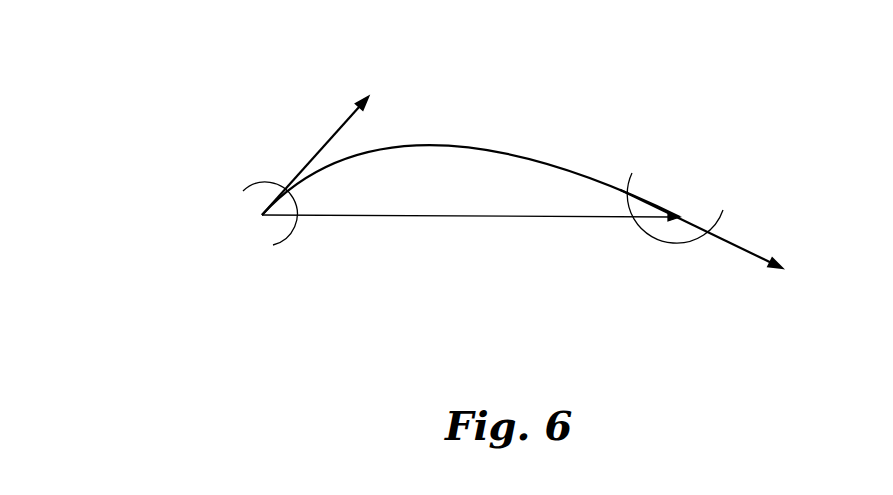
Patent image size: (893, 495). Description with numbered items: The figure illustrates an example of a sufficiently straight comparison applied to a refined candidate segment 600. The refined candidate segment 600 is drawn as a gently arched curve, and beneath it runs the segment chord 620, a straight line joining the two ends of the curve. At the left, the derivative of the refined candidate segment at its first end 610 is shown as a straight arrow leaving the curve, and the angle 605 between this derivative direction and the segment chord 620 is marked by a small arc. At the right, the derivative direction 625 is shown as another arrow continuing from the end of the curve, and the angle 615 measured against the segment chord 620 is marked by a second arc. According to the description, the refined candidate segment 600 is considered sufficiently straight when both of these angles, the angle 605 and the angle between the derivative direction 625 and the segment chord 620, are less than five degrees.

The refined candidate segment 600 is at (492, 140).
The angle 605 is at (234, 190).
The refined candidate segment first end 610 is at (312, 139).
The angle 615 is at (650, 244).
The segment chord 620 is at (445, 226).
The derivative direction 625 is at (748, 239).